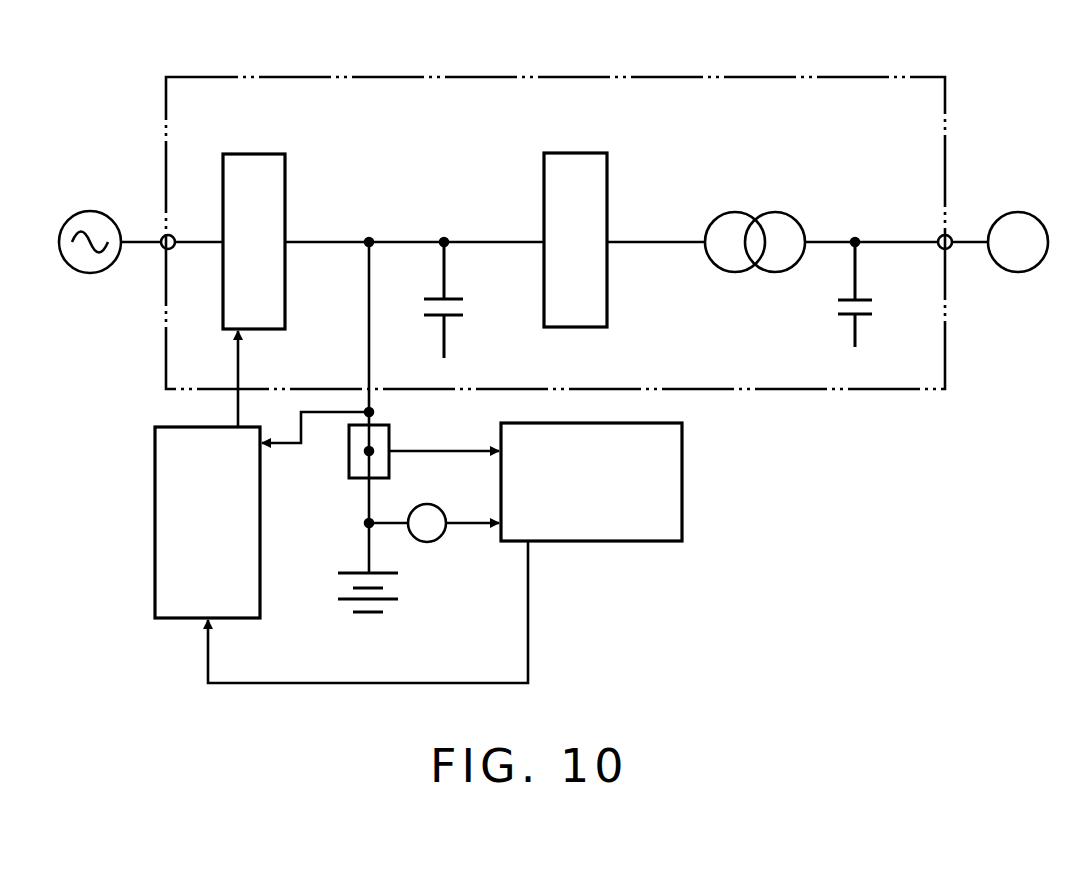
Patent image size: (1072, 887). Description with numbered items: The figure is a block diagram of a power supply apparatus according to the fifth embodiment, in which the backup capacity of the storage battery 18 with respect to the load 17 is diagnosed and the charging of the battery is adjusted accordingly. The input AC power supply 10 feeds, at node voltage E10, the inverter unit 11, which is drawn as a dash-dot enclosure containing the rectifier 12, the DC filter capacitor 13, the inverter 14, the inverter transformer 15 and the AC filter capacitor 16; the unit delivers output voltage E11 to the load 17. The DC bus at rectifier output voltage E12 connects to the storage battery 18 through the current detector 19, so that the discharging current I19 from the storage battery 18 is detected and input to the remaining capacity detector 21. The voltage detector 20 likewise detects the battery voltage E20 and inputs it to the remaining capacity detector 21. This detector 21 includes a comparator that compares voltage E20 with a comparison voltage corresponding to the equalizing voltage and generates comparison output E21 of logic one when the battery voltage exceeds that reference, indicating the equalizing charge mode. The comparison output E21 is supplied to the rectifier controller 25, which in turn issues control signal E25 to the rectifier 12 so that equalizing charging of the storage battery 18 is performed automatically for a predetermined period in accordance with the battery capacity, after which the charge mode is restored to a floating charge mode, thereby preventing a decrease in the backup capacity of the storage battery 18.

The input AC power supply 10 is at (84, 210).
The inverter unit 11 is at (888, 73).
The rectifier 12 is at (256, 153).
The DC filter capacitor 13 is at (450, 320).
The inverter 14 is at (574, 152).
The inverter transformer 15 is at (733, 212).
The AC filter capacitor 16 is at (846, 320).
The load 17 is at (1020, 212).
The storage battery 18 is at (338, 606).
The current detector 19 is at (348, 442).
The voltage detector 20 is at (430, 542).
The remaining capacity detector 21 is at (682, 500).
The rectifier controller 25 is at (155, 488).
The input voltage E10 is at (137, 240).
The output voltage E11 is at (968, 246).
The rectifier output voltage E12 is at (370, 238).
The voltage E20 is at (462, 518).
The comparison output E21 is at (530, 654).
The rectifier control signal E25 is at (240, 354).
The discharging current I19 is at (397, 448).